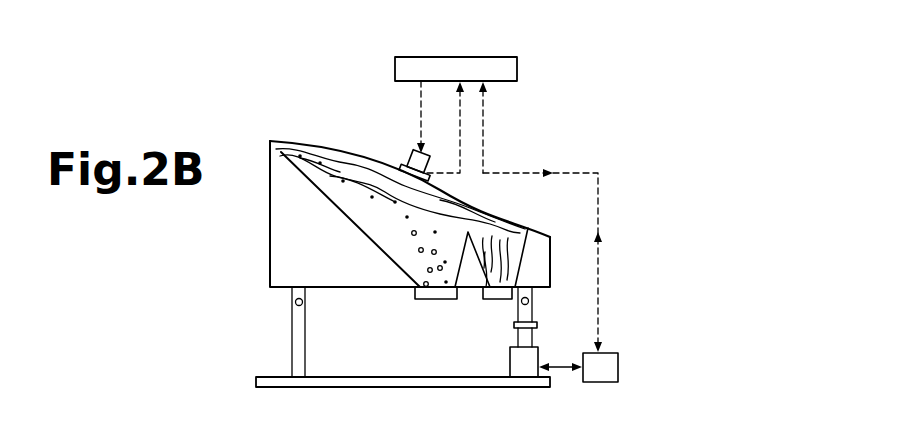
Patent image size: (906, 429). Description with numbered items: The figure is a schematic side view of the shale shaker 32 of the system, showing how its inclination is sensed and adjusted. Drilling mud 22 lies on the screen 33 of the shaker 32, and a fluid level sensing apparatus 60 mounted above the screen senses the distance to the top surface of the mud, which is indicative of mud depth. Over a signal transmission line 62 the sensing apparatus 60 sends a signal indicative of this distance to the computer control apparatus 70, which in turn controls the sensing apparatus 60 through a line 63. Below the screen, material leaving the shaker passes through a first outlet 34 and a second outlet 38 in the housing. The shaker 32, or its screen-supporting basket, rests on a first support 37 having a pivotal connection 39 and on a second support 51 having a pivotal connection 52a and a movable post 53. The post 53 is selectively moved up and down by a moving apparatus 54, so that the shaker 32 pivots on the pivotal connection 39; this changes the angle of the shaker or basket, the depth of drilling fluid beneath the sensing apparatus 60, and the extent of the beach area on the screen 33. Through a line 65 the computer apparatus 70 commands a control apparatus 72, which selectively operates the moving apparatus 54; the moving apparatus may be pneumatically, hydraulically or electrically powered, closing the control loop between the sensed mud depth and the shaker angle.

The drilling mud 22 is at (296, 134).
The shale shaker 32 is at (340, 270).
The screen 33 is at (377, 193).
The first outlet 34 is at (432, 298).
The first support 37 is at (292, 362).
The second outlet 38 is at (500, 286).
The pivotal connection 39 is at (294, 300).
The second support 51 is at (520, 336).
The pivot joint 52a is at (520, 302).
The movable post 53 is at (532, 338).
The moving apparatus 54 is at (516, 358).
The fluid level sensing apparatus 60 is at (403, 162).
The signal transmission line 62 is at (460, 117).
The line 63 is at (420, 115).
The line 65 is at (568, 173).
The control apparatus 70 is at (507, 67).
The control apparatus 72 is at (610, 368).